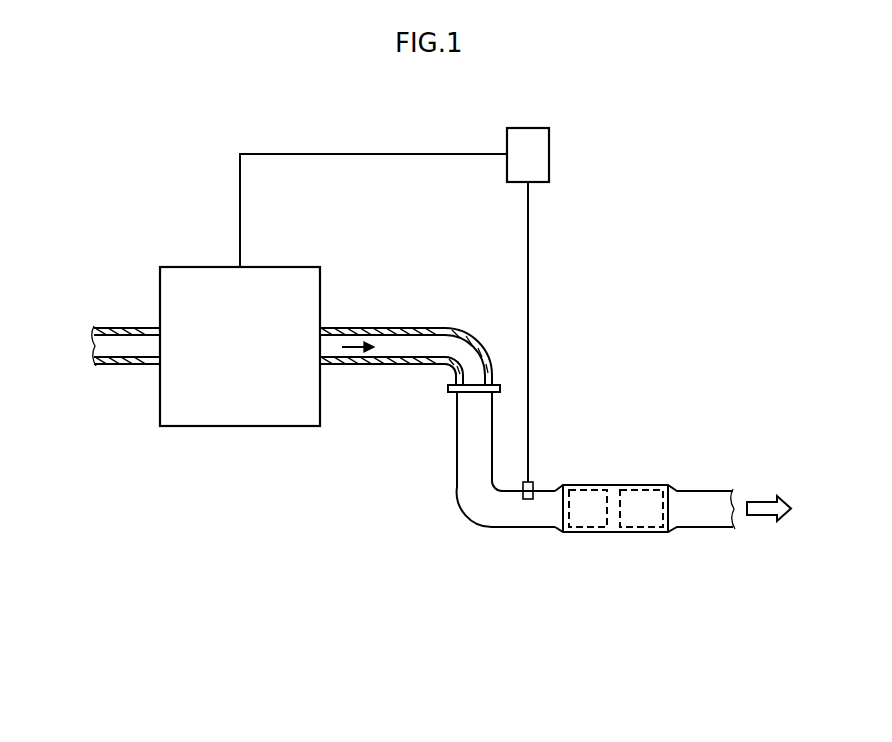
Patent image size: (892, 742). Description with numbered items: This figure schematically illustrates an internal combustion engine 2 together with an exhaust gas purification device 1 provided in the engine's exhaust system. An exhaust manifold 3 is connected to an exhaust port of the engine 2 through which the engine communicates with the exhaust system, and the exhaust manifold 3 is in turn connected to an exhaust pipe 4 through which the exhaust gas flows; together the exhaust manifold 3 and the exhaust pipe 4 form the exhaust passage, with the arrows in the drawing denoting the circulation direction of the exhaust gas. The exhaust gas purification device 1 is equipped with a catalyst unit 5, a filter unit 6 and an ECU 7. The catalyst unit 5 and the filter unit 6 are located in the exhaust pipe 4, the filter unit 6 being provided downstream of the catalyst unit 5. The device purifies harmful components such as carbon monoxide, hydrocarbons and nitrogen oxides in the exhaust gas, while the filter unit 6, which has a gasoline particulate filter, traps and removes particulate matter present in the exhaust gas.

The exhaust gas purification device 1 is at (645, 513).
The internal combustion engine 2 is at (301, 257).
The exhaust manifold 3 is at (412, 327).
The exhaust pipe 4 is at (457, 436).
The catalyst unit 5 is at (590, 487).
The filter unit 6 is at (643, 487).
The ECU 7 is at (550, 145).